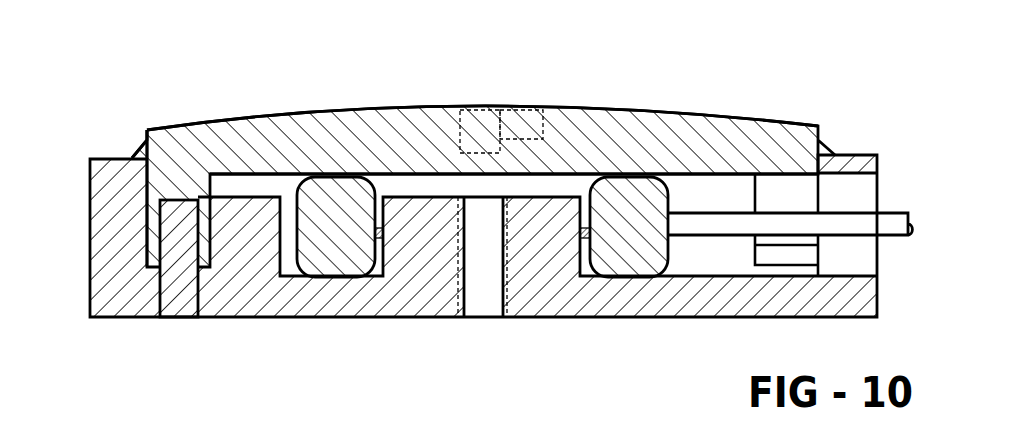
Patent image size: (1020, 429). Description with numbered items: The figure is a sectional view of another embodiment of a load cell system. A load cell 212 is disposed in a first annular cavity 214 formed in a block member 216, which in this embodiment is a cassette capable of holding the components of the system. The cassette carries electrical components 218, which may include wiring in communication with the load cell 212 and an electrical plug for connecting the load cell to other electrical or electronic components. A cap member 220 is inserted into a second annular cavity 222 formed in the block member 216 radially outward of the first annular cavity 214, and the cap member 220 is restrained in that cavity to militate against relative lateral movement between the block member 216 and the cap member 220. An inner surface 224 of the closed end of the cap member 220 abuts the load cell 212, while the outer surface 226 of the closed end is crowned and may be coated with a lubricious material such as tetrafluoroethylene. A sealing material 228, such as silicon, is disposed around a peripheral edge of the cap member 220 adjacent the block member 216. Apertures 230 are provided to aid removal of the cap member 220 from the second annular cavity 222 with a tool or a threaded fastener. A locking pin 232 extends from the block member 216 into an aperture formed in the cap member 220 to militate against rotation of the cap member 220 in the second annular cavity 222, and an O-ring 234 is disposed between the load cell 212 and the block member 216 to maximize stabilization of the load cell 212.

The load cell 212 is at (666, 256).
The first annular cavity 214 is at (290, 240).
The block member 216 is at (404, 293).
The electrical components 218 is at (897, 235).
The cap member 220 is at (783, 135).
The second annular cavity 222 is at (160, 240).
The inner surface 224 is at (450, 178).
The outer surface 226 is at (700, 115).
The sealing material 228 is at (147, 148).
The apertures 230 is at (540, 140).
The locking pin 232 is at (180, 317).
The O-ring 234 is at (577, 242).